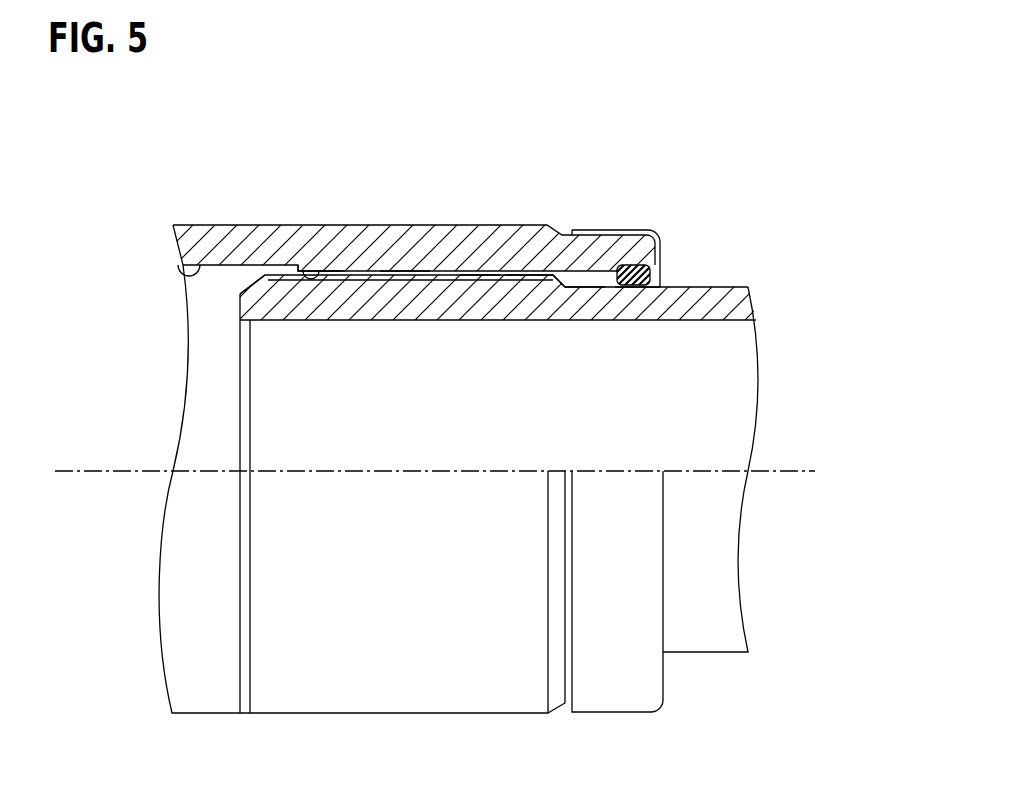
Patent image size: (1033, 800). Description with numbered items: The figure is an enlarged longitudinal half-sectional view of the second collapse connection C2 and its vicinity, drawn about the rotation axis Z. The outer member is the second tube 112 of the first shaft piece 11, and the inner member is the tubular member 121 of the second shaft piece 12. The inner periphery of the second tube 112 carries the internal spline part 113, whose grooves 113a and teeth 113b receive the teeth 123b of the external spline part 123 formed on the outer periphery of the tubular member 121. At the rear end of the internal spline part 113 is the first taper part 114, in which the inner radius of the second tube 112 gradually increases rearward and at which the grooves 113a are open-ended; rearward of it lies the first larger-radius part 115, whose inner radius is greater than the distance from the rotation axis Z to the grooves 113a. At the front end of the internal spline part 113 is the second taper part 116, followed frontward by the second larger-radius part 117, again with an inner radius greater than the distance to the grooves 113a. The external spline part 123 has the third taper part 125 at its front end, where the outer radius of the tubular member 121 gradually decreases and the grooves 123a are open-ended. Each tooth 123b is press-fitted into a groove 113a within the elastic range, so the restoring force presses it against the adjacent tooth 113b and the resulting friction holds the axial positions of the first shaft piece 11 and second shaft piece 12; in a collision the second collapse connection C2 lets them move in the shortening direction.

The first shaft piece 11 is at (362, 403).
The second tube 112 is at (213, 243).
The internal spline part 113 is at (558, 140).
The grooves of internal spline part 113a is at (467, 291).
The tooth of internal spline part 113b is at (520, 289).
The first taper part 114 is at (583, 262).
The first larger-radius part 115 is at (640, 264).
The second taper part 116 is at (336, 279).
The second larger-radius part 117 is at (178, 263).
The second shaft piece 12 is at (499, 449).
The tubular member 121 is at (700, 300).
The external spline part 123 is at (378, 105).
The grooves of external spline part 123a is at (290, 268).
The tooth of external spline part 123b is at (312, 272).
The third taper part 125 is at (252, 277).
The second collapse connection C2 is at (401, 264).
The rotation axis Z is at (780, 469).